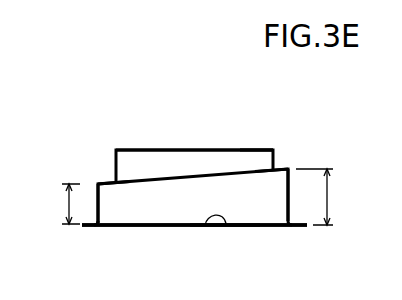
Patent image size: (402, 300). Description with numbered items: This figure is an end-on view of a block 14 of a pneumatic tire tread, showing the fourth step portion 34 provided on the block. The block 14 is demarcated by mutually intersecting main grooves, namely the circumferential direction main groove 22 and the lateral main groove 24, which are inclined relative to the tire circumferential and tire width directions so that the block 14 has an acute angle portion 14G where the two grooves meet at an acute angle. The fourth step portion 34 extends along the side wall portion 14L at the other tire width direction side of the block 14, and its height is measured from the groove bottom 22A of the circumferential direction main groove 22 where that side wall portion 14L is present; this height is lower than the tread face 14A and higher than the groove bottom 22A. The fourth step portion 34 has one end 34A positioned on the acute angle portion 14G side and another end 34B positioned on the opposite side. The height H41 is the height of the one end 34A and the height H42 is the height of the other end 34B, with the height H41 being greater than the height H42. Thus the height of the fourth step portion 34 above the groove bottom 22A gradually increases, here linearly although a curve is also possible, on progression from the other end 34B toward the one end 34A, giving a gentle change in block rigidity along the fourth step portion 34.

The block 14 is at (198, 148).
The tread face 14A is at (153, 150).
The acute angle portion 14G is at (248, 148).
The side wall portion 14L is at (178, 217).
The fourth step portion 34 is at (235, 171).
The one end 34A is at (285, 168).
The other end 34B is at (112, 182).
The lateral main groove 24 is at (70, 173).
The circumferential direction main groove 22 is at (230, 203).
The groove bottom 22A is at (227, 225).
The height H42 is at (53, 204).
The height H41 is at (331, 197).